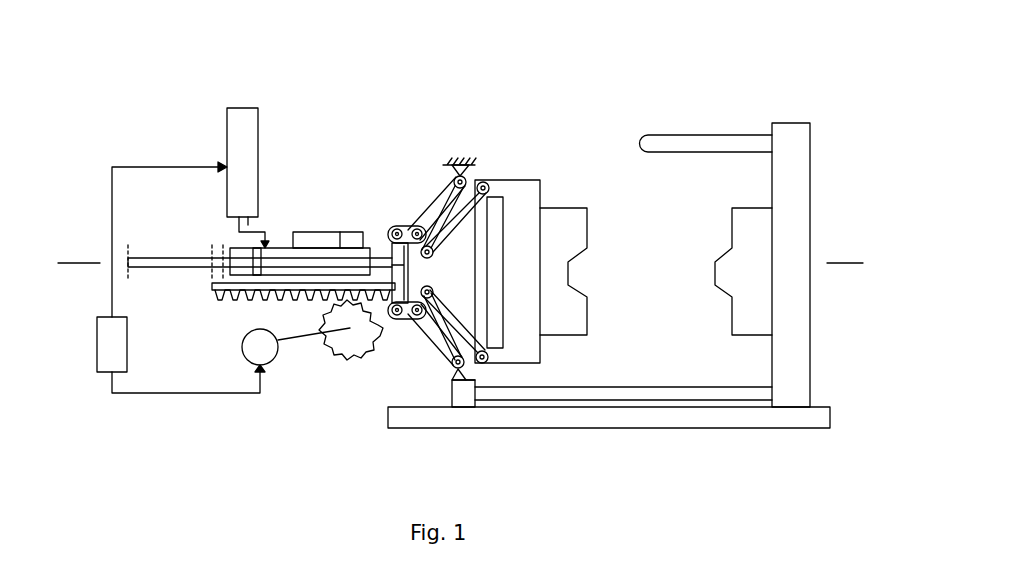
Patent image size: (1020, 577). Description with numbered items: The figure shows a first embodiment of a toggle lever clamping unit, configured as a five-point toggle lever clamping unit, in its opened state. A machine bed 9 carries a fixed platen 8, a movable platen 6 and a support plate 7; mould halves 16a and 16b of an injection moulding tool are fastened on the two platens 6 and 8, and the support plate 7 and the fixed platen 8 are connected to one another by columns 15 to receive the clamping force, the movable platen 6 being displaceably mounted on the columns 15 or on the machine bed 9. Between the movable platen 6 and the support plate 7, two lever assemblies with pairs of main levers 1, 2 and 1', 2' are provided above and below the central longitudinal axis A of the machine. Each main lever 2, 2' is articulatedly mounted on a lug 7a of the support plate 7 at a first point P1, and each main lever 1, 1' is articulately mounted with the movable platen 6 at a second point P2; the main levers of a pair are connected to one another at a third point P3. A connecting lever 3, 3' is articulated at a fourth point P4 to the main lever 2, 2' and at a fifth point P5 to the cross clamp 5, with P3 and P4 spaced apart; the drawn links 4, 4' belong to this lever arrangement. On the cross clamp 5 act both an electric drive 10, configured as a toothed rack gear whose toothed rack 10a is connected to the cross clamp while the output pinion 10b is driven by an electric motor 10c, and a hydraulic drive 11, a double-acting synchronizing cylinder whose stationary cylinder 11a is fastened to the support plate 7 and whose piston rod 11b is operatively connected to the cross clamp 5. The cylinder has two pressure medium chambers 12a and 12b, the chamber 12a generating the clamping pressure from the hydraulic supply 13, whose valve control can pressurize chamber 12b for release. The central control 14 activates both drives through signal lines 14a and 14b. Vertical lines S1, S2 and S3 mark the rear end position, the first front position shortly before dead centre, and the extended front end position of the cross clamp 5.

The main lever 1 is at (476, 222).
The main lever 1' is at (477, 326).
The main lever 2 is at (459, 218).
The main lever 2' is at (460, 321).
The connecting lever 3 is at (407, 208).
The connecting lever 3' is at (395, 352).
The link 4 is at (436, 184).
The link 4' is at (435, 334).
The cross clamp 5 is at (404, 265).
The movable platen 6 is at (540, 360).
The support plate 7 is at (458, 162).
The lug 7a is at (460, 387).
The fixed platen 8 is at (790, 142).
The machine bed 9 is at (395, 413).
The electric drive 10 is at (205, 288).
The toothed rack 10a is at (298, 290).
The output pinion 10b is at (330, 352).
The electric motor 10c is at (243, 352).
The hydraulic drive 11 is at (265, 248).
The cylinder 11a is at (300, 258).
The piston rod 11b is at (347, 248).
The pressure medium chamber 12a is at (235, 275).
The pressure medium chamber 12b is at (368, 258).
The hydraulic supply 13 is at (247, 117).
The central control 14 is at (97, 345).
The signal line 14a is at (145, 167).
The signal line 14b is at (185, 393).
The columns 15 is at (678, 147).
The mould half 16a is at (572, 212).
The mould half 16b is at (750, 220).
The first articulation point P1 is at (468, 180).
The second articulation point P2 is at (488, 186).
The third articulation point P3 is at (433, 253).
The fourth articulation point P4 is at (417, 228).
The fifth articulation point P5 is at (396, 228).
The line S1 is at (254, 249).
The line S2 is at (212, 248).
The line S3 is at (223, 248).
The central longitudinal axis A is at (80, 263).